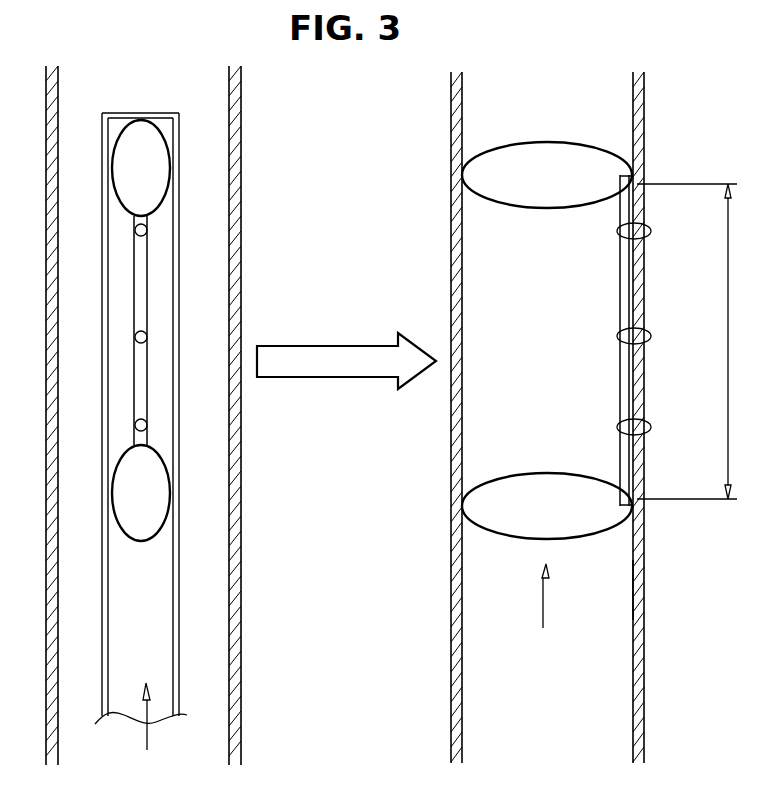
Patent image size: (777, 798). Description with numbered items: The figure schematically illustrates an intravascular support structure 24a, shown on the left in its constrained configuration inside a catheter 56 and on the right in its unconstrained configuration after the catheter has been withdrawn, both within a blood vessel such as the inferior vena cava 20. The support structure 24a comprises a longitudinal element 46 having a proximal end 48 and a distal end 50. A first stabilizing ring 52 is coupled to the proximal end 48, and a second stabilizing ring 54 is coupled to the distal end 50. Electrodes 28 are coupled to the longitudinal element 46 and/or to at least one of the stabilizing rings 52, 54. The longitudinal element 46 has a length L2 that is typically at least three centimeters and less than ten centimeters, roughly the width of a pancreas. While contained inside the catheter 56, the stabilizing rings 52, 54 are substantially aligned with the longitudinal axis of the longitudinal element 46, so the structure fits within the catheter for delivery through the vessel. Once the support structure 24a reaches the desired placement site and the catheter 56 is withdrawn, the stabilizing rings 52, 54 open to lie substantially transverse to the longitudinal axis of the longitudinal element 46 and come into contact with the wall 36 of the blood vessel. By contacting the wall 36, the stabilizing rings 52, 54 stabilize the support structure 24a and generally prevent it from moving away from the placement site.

The inferior vena cava 20 is at (235, 148).
The intravascular support structure 24a is at (147, 750).
The electrodes 28 is at (136, 337).
The wall 36 is at (644, 589).
The longitudinal element 46 is at (138, 383).
The proximal end 48 is at (636, 500).
The distal end 50 is at (632, 182).
The first stabilizing ring 52 is at (121, 450).
The second stabilizing ring 54 is at (141, 121).
The catheter 56 is at (105, 551).
The length L2 is at (691, 341).